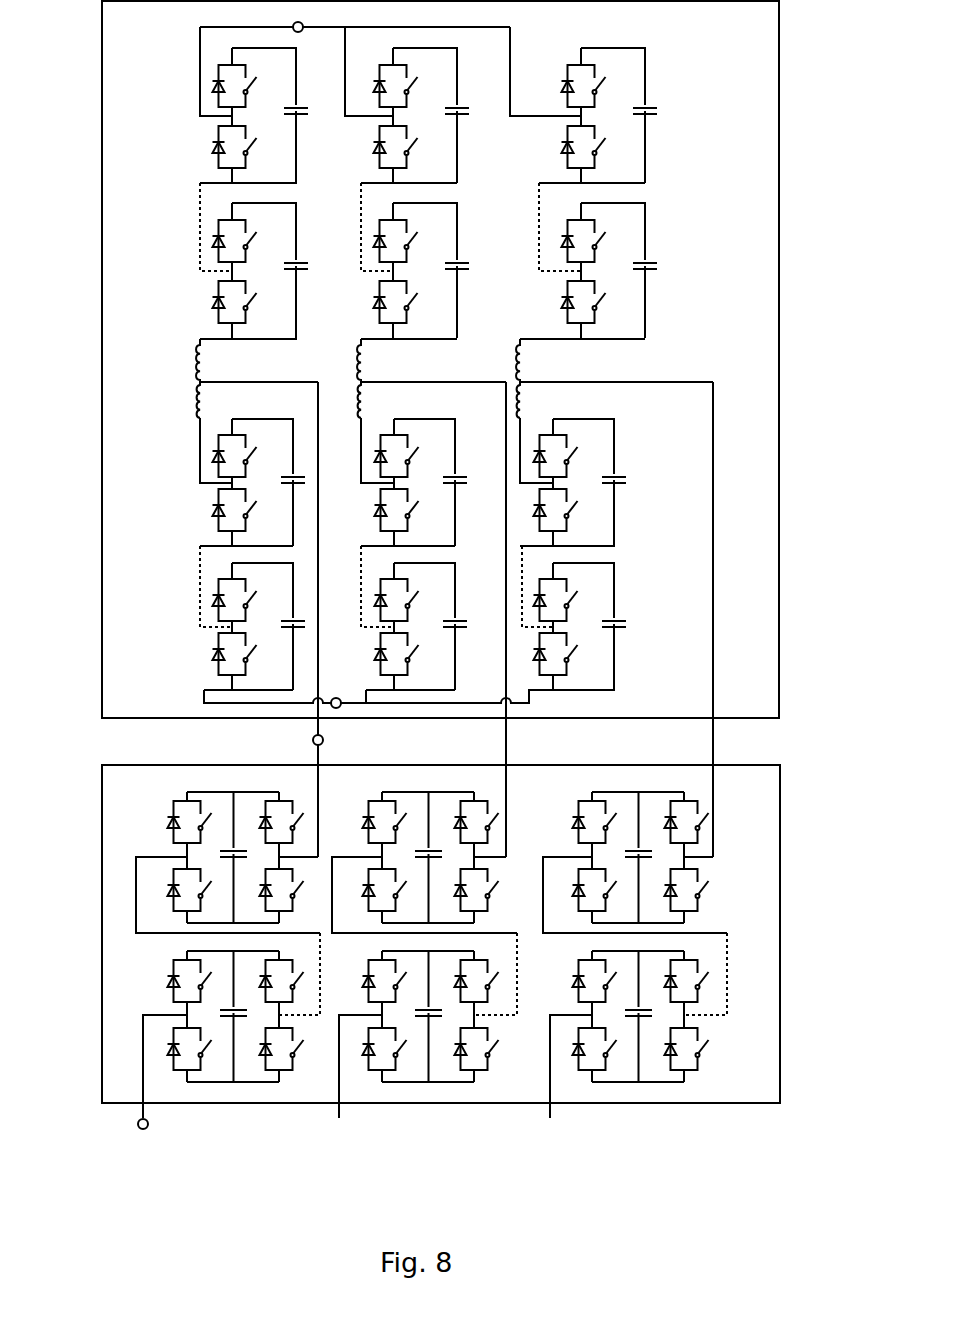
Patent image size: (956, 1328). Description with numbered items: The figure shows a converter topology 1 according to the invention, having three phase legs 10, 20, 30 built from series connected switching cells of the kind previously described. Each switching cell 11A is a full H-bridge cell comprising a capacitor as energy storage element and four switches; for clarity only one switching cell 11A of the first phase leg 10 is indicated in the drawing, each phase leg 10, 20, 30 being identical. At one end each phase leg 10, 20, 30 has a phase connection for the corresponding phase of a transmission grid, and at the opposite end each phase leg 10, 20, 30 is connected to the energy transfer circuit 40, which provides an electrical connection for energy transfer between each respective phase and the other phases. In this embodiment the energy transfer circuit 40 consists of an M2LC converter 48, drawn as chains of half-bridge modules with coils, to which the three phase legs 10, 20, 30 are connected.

The power converter system 1 is at (78, 70).
The energy transfer circuit 40 is at (818, 116).
The M2LC converter 48 is at (742, 46).
The switching cell 11A is at (176, 794).
The first phase leg 10 is at (192, 1130).
The second phase leg 20 is at (424, 1134).
The third phase leg 30 is at (634, 1138).